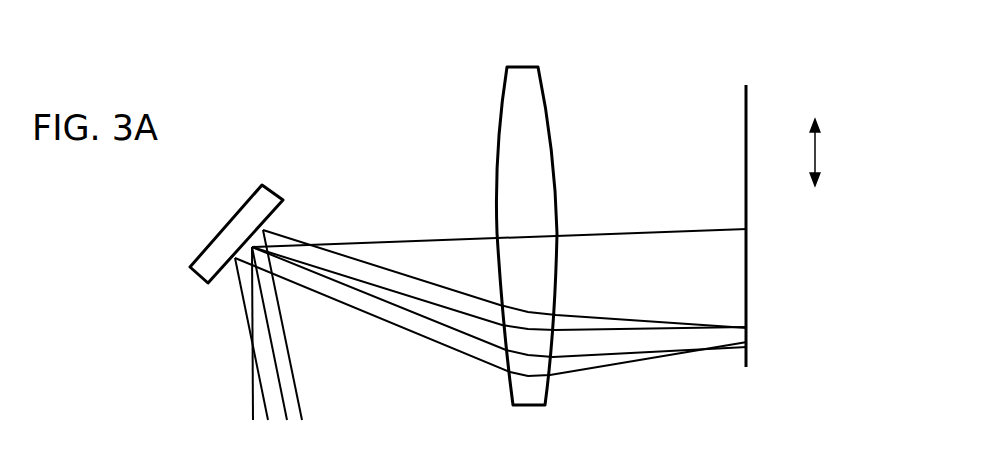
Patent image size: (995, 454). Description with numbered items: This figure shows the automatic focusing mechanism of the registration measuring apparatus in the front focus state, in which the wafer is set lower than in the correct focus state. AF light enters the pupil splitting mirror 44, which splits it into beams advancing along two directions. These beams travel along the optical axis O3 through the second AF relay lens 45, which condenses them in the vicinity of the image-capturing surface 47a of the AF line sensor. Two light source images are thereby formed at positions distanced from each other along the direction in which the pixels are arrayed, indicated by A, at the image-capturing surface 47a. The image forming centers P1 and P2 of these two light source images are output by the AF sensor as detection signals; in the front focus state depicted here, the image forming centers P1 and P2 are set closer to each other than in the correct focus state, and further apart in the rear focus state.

The pupil splitting mirror 44 is at (273, 192).
The second AF relay lens 45 is at (523, 74).
The image-capturing surface 47a is at (744, 108).
The optical axis O3 is at (433, 234).
The image forming center P1 is at (808, 318).
The image forming center P2 is at (808, 359).
The direction in which the pixels are arrayed A is at (824, 152).